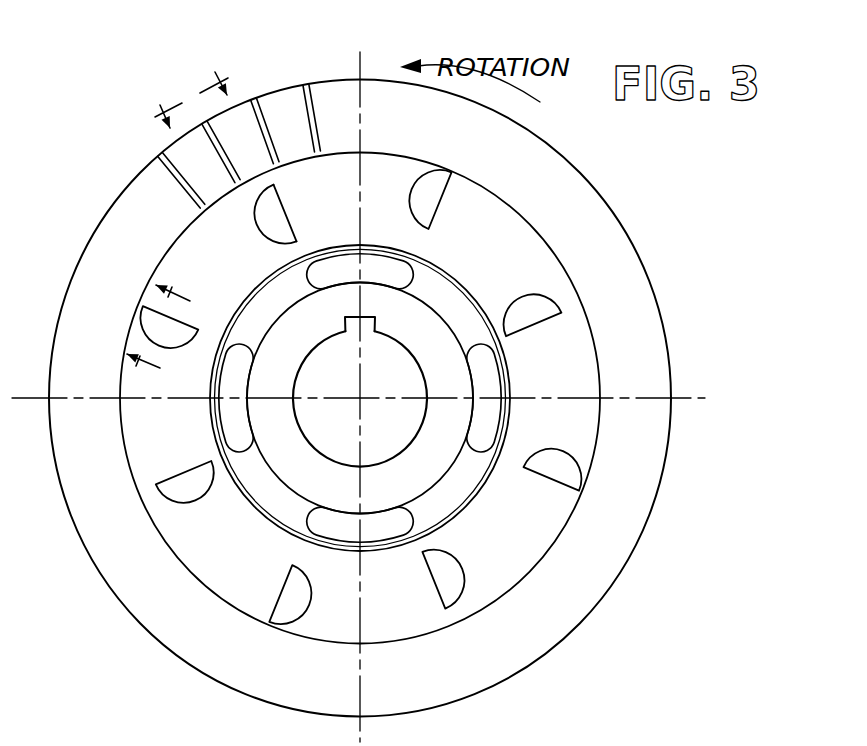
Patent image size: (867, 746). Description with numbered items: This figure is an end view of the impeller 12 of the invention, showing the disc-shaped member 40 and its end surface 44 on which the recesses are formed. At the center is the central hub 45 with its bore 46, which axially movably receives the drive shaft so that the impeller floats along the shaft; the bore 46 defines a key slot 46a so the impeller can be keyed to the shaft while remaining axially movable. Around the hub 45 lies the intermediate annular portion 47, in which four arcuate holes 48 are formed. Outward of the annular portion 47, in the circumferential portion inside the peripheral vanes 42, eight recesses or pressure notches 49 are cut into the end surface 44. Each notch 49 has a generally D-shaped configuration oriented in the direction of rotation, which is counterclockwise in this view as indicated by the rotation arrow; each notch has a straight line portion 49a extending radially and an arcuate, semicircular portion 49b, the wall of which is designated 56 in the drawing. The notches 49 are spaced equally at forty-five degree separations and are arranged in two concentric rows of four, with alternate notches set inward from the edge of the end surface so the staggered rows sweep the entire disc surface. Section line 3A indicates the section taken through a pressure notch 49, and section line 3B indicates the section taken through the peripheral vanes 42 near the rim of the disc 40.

The impeller 12 is at (112, 681).
The disc-shaped member 40 is at (92, 556).
The peripheral vanes 42 is at (281, 107).
The end surface 44 is at (514, 246).
The central hub 45 is at (440, 452).
The bore 46 is at (402, 370).
The key slot 46a is at (357, 328).
The intermediate annular portion 47 is at (462, 307).
The arcuate holes 48 is at (492, 380).
The pressure notches 49 is at (428, 217).
The straight line portion 49a is at (283, 199).
The arcuate, semicircular portion 49b is at (270, 248).
The pocket wall 56 is at (404, 194).
The section line 3A- 3A is at (157, 326).
The section line 3B- 3B is at (193, 103).